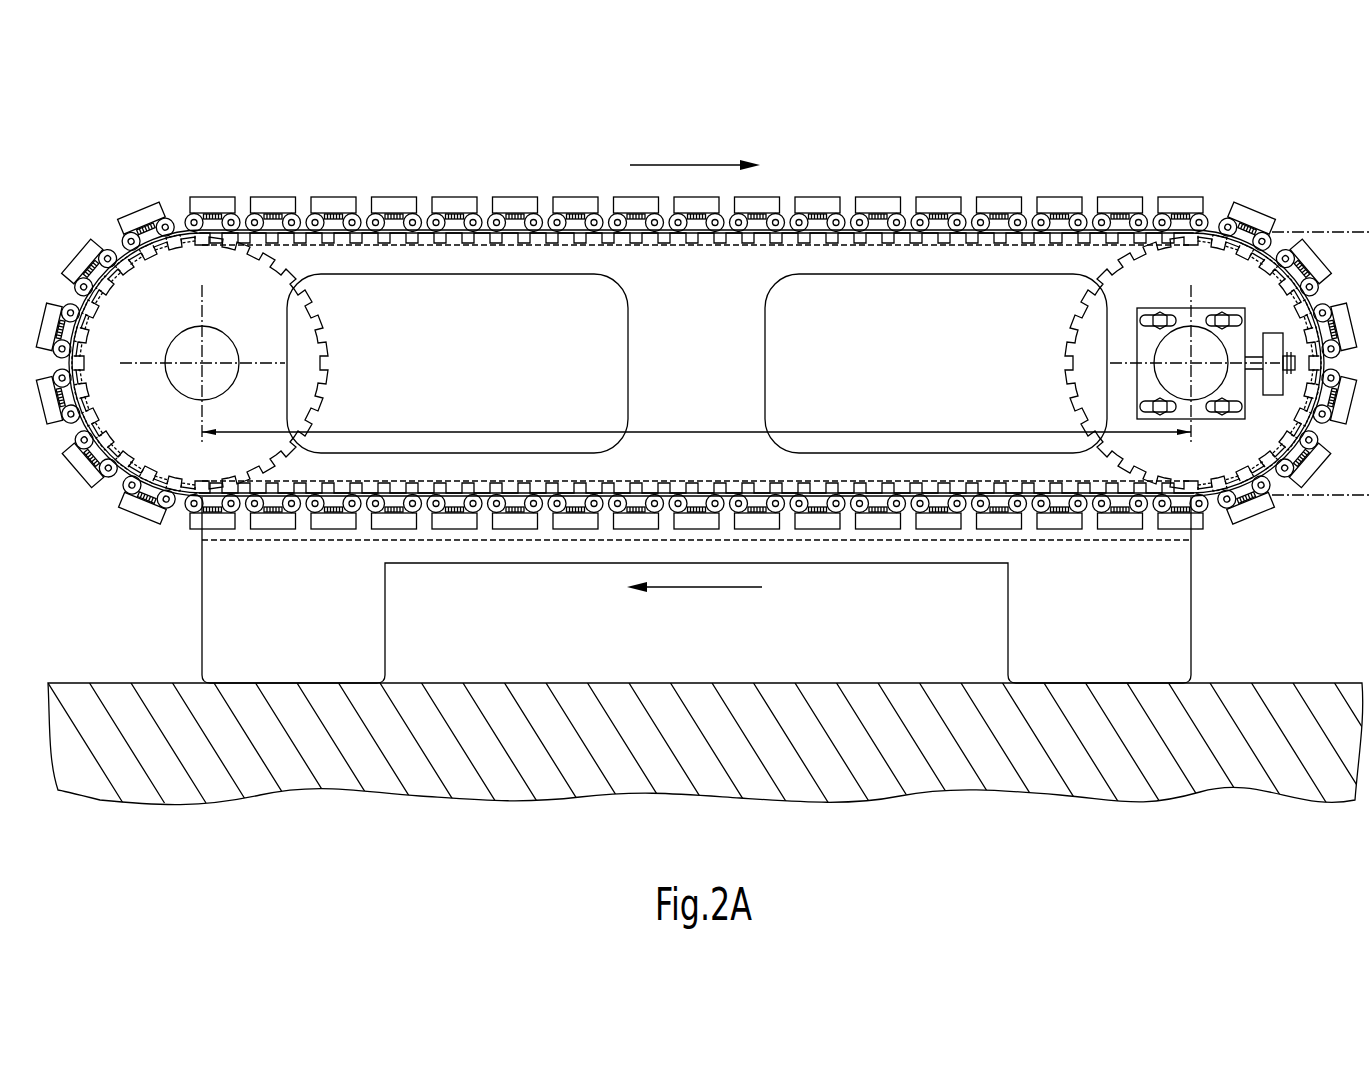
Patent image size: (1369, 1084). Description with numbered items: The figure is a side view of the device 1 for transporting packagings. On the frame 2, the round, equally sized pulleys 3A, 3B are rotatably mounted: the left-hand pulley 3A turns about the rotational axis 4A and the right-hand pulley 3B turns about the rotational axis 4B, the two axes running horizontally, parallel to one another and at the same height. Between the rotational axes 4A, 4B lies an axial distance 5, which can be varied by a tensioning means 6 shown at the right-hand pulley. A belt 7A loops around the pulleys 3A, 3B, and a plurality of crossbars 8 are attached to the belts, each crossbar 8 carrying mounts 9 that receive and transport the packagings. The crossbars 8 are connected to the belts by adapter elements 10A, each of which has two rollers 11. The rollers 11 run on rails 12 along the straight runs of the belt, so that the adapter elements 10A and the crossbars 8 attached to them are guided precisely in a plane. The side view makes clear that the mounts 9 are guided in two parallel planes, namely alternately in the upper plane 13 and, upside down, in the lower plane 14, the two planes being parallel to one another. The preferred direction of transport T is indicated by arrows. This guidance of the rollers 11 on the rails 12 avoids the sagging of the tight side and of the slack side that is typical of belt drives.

The device 1 is at (84, 129).
The frame 2 is at (222, 598).
The pulley 3A is at (302, 368).
The pulley 3B is at (1083, 367).
The rotational axis 4A is at (202, 363).
The rotational axis 4B is at (1191, 363).
The axial distance 5 is at (696, 416).
The tensioning means 6 is at (1199, 320).
The belt 7A is at (215, 240).
The crossbar 8 is at (393, 210).
The mount 9 is at (576, 205).
The front adapter element 10A is at (460, 210).
The roller 11 is at (289, 224).
The rail 12 is at (686, 245).
The upper plane 13 is at (1333, 232).
The lower plane 14 is at (1330, 497).